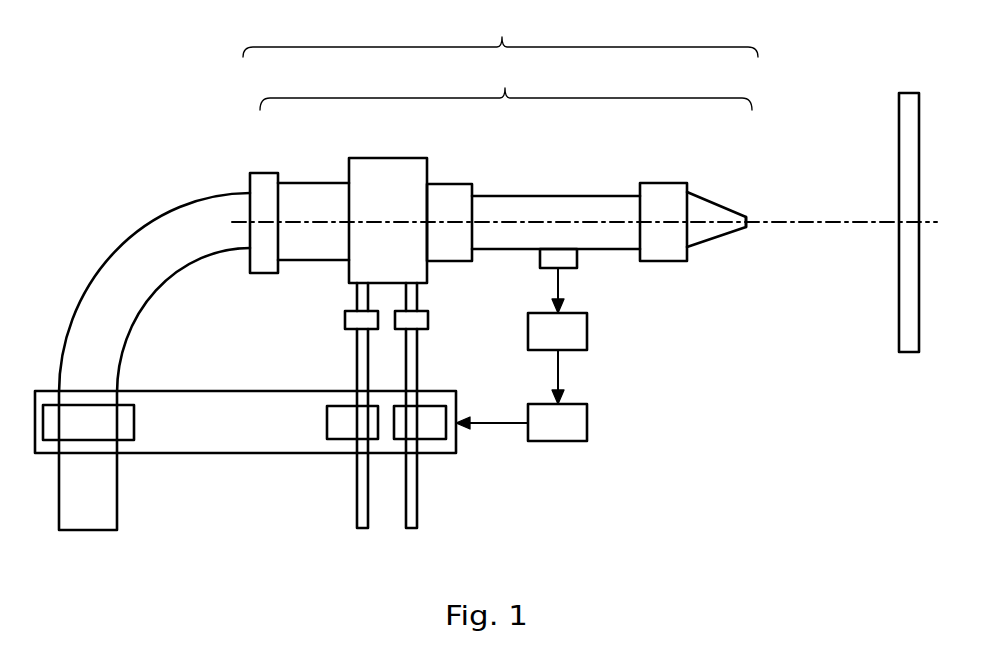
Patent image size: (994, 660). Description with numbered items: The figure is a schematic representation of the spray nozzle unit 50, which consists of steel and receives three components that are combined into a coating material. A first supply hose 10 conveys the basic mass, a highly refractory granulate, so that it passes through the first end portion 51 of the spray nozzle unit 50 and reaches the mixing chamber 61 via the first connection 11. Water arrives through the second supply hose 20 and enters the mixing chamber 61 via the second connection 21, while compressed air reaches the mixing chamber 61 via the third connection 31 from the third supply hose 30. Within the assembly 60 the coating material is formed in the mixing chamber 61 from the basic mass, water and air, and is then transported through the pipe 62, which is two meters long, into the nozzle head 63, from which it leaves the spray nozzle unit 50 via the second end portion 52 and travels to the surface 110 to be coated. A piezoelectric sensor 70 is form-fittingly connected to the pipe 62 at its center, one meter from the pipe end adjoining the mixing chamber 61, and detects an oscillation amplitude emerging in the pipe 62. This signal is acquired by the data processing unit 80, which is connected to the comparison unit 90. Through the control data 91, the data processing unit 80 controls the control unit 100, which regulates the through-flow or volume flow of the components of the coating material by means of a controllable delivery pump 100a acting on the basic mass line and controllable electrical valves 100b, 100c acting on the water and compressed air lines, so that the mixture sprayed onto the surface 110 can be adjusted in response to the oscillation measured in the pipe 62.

The first supply hose 10 is at (128, 247).
The first connection 11 is at (267, 180).
The second supply hose 20 is at (360, 361).
The second connection 21 is at (360, 318).
The third supply hose 30 is at (420, 358).
The third connection 31 is at (432, 322).
The spray nozzle unit 50 is at (500, 33).
The first end portion 51 is at (250, 190).
The second end portion 52 is at (747, 221).
The mixing chamber, pipe and nozzle head assembly 60 is at (506, 85).
The mixing chamber 61 is at (382, 170).
The pipe 62 is at (558, 207).
The nozzle head 63 is at (700, 214).
The piezoelectric sensor 70 is at (570, 262).
The data processing unit 80 is at (570, 330).
The comparison unit 90 is at (568, 420).
The control data 91 is at (492, 442).
The control unit 100 is at (216, 427).
The controllable delivery pump 100a is at (116, 430).
The controllable electrical valve 100b is at (337, 425).
The controllable electrical valve 100c is at (420, 427).
The surface to be coated 110 is at (897, 277).